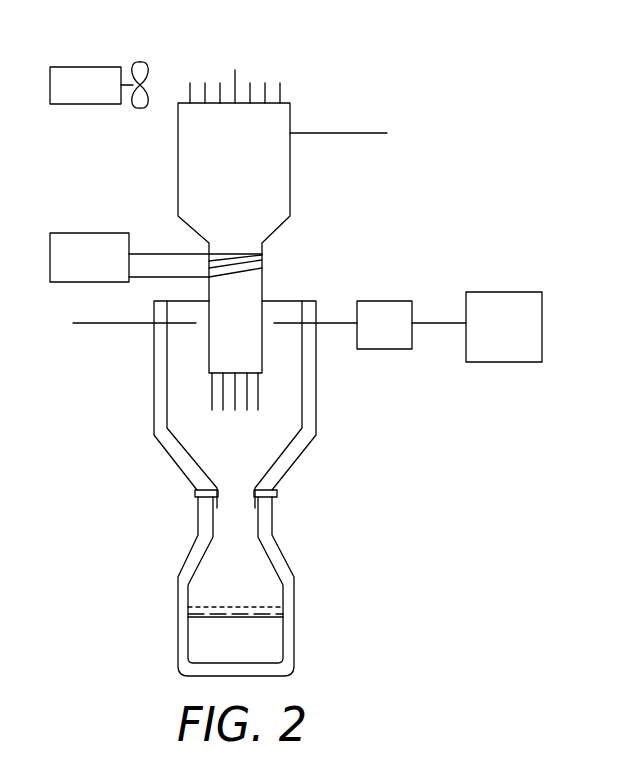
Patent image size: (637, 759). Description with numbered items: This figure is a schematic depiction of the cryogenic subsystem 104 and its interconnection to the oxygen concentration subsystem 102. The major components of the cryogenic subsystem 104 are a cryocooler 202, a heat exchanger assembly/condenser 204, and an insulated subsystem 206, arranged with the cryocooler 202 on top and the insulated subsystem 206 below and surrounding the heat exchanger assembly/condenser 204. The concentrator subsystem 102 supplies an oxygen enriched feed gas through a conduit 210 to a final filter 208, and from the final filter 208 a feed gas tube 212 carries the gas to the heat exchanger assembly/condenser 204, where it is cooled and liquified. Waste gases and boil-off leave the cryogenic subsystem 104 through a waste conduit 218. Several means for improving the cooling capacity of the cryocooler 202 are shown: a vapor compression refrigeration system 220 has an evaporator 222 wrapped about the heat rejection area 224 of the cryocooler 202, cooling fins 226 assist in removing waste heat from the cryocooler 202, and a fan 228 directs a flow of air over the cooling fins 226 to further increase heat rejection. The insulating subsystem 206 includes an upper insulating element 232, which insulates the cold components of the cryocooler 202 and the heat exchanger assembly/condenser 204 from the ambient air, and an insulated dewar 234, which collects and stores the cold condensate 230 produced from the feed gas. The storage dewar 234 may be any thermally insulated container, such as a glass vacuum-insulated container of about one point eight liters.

The oxygen concentration subsystem 102 is at (510, 363).
The cryogenic subsystem 104 is at (360, 100).
The cryocooler 202 is at (282, 178).
The heat exchanger assembly/condenser 204 is at (203, 432).
The insulated subsystem 206 is at (322, 513).
The final filter 208 is at (400, 350).
The conduit 210 is at (430, 322).
The feed gas tube 212 is at (327, 326).
The waste conduit 218 is at (86, 325).
The vapor compression refrigeration system 220 is at (100, 233).
The evaporator 222 is at (247, 270).
The heat rejection area 224 is at (262, 258).
The cooling fins 226 is at (266, 90).
The fan 228 is at (82, 67).
The condensate 230 is at (207, 638).
The upper insulating element 232 is at (158, 405).
The insulated dewar 234 is at (293, 612).